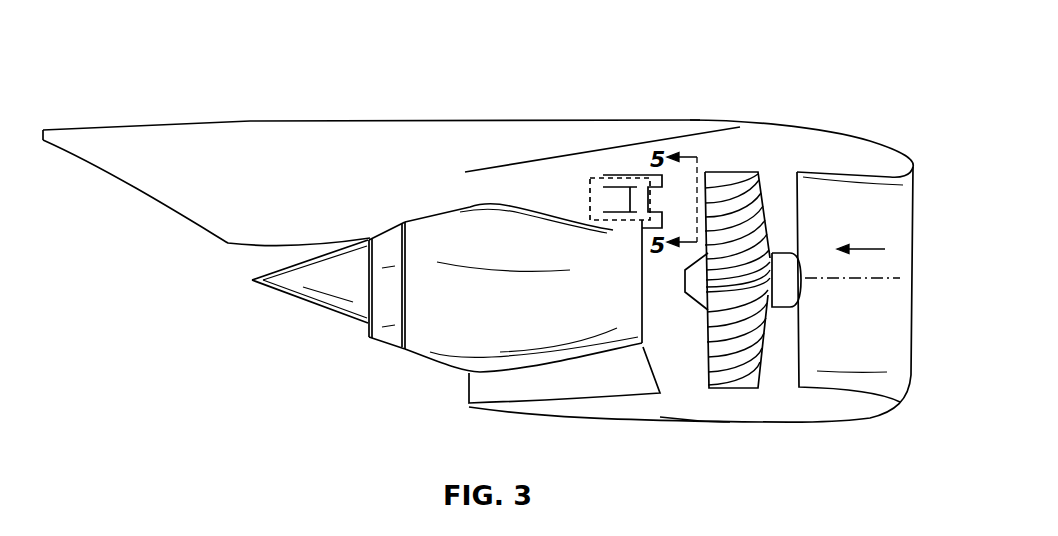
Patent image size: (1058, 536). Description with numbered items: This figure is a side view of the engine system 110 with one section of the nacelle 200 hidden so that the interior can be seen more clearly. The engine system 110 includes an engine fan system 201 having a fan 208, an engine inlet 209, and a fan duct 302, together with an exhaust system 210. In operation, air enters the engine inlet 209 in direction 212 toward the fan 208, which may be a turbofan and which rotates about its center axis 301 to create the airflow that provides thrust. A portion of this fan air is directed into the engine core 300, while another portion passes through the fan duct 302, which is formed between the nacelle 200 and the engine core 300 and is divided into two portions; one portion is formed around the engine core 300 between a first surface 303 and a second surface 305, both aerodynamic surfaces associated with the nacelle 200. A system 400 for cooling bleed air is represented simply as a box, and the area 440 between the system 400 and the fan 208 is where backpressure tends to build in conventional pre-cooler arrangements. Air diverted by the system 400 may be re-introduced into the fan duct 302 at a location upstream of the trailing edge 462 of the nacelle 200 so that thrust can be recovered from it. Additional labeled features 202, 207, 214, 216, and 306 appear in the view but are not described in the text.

The engine system 110 is at (712, 46).
The nacelle 200 is at (868, 138).
The engine fan system 201 is at (892, 204).
The nacelle outer surface 202 is at (722, 116).
The fan cowl 207 is at (812, 140).
The fan 208 is at (742, 172).
The engine inlet 209 is at (918, 365).
The exhaust system 210 is at (345, 332).
The direction 212 is at (866, 249).
The pylon 214 is at (621, 127).
The wing 216 is at (250, 118).
The engine core 300 is at (438, 336).
The center axis 301 is at (855, 281).
The fan duct 302 is at (560, 183).
The first surface 303 is at (518, 180).
The second surface 305 is at (632, 384).
The mount bracket 306 is at (638, 180).
The system for cooling bleed air 400 is at (603, 175).
The area 440 is at (671, 198).
The trailing edge 462 is at (465, 172).